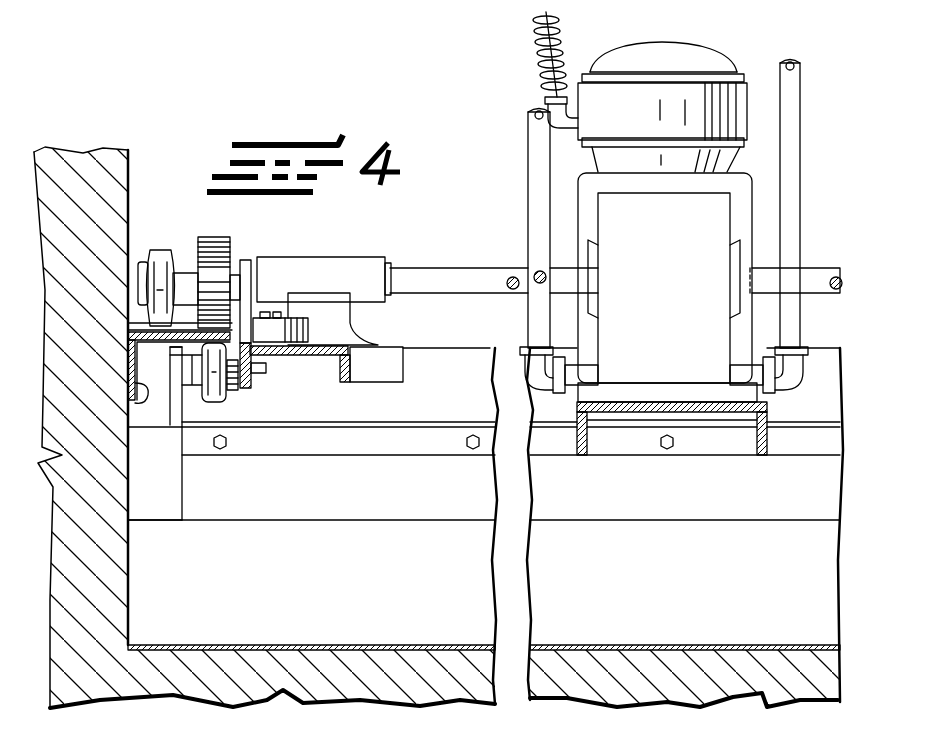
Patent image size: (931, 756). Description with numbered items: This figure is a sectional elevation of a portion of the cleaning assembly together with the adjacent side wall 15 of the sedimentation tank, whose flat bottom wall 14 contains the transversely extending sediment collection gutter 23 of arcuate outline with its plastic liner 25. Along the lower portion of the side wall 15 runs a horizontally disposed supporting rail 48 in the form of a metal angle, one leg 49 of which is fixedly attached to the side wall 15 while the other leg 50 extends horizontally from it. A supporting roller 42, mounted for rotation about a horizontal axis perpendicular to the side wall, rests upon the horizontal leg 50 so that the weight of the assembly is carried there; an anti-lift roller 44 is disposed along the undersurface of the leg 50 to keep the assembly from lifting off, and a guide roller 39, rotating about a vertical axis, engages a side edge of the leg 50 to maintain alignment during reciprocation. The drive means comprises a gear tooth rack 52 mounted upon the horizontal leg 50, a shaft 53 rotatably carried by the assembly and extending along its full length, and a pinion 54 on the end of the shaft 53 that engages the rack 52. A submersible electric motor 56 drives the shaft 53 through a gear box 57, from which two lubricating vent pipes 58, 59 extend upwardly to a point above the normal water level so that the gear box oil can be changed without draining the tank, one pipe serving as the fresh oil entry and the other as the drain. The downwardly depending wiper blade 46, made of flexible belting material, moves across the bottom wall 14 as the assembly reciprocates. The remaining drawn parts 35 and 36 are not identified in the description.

The side wall 15 is at (131, 170).
The supporting roller 42 is at (161, 252).
The pinion 54 is at (209, 246).
The guide roller 39 is at (281, 330).
The shaft 53 is at (474, 285).
The submersible electric motor 56 is at (667, 50).
The lubricating vent pipe 59 is at (527, 152).
The lubricating vent pipe 58 is at (790, 173).
The gear box 57 is at (676, 254).
The horizontal leg 50 is at (128, 330).
The supporting rail 48 is at (112, 366).
The leg 49 is at (128, 403).
The gear tooth rack 52 is at (170, 345).
The bottom wall 14 is at (160, 520).
The anti-lift roller 44 is at (212, 397).
The pedestal 35 is at (320, 358).
The wiper blade 46 is at (402, 505).
The sediment collection gutter 23 is at (255, 548).
The plastic liner 25 is at (316, 645).
The channel mount 36 is at (752, 440).